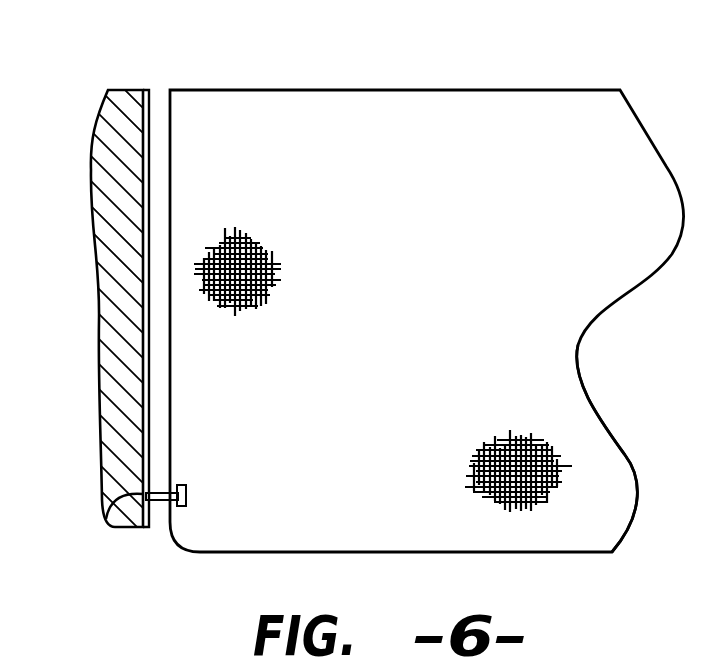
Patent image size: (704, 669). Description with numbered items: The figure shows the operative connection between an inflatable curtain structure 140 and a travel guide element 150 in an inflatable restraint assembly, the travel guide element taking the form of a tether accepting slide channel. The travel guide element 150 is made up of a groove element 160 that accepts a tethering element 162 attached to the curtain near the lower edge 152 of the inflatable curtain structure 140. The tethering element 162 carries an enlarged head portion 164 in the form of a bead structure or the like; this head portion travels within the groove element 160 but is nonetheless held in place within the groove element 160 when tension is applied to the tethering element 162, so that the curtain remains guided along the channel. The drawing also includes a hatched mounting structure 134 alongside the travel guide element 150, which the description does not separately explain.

The wall 134 is at (99, 297).
The inflatable curtain structure 140 is at (446, 233).
The travel guide element 150 is at (152, 95).
The lower edge 152 is at (568, 554).
The groove element 160 is at (152, 125).
The tethering element 162 is at (160, 506).
The enlarged head portion 164 is at (112, 518).